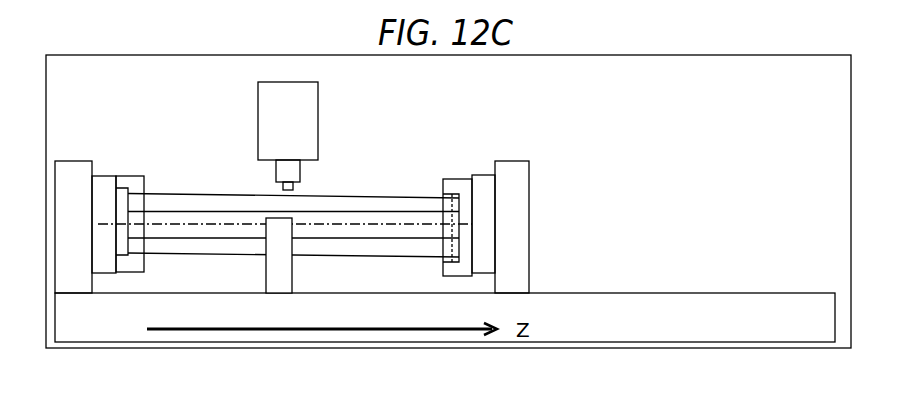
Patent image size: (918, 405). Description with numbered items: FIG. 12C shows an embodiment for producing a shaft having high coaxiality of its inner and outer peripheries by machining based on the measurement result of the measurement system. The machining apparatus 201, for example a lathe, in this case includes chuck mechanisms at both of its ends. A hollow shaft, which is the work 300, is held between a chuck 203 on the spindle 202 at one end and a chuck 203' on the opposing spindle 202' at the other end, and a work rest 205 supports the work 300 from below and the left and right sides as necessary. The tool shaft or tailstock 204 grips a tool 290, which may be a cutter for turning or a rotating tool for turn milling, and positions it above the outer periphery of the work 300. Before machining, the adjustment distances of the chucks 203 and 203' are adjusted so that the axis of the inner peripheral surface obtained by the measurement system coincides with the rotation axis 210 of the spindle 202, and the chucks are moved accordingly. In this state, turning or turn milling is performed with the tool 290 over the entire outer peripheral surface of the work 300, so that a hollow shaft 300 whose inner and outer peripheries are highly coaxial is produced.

The machining apparatus 201 is at (448, 201).
The spindle 202 is at (117, 193).
The chuck 203 is at (150, 200).
The hollow shaft (object to be measured / work) 300 is at (180, 200).
The rotation axis 210 is at (208, 225).
The tool shaft (tailstock) 204 is at (310, 100).
The tool 290 is at (291, 185).
The chuck 203' is at (437, 202).
The spindle 202' is at (476, 193).
The work rest 205 is at (283, 263).